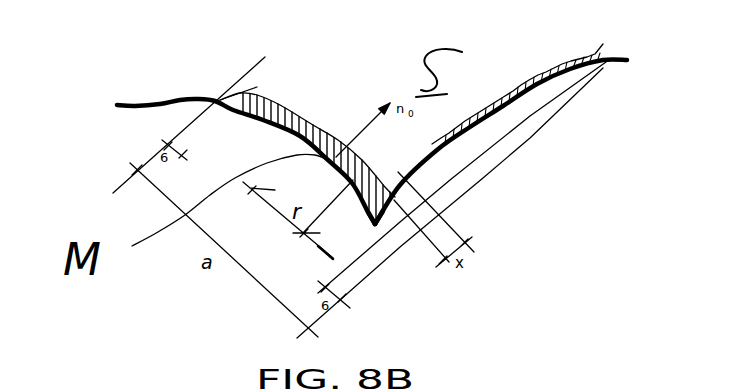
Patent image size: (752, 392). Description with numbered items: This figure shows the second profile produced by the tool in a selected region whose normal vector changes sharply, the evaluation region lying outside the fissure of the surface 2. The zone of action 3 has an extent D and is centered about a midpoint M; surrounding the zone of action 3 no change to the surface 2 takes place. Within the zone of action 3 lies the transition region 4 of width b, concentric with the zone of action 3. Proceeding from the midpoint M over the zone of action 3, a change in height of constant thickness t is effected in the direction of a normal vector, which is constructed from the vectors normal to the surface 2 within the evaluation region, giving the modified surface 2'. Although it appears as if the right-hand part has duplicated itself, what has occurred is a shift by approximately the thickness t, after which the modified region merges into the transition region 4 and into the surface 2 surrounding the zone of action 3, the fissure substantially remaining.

The surface 2 is at (246, 122).
The modified surface 2' is at (424, 279).
The zone of action 3 is at (251, 278).
The transition region 4 is at (604, 54).